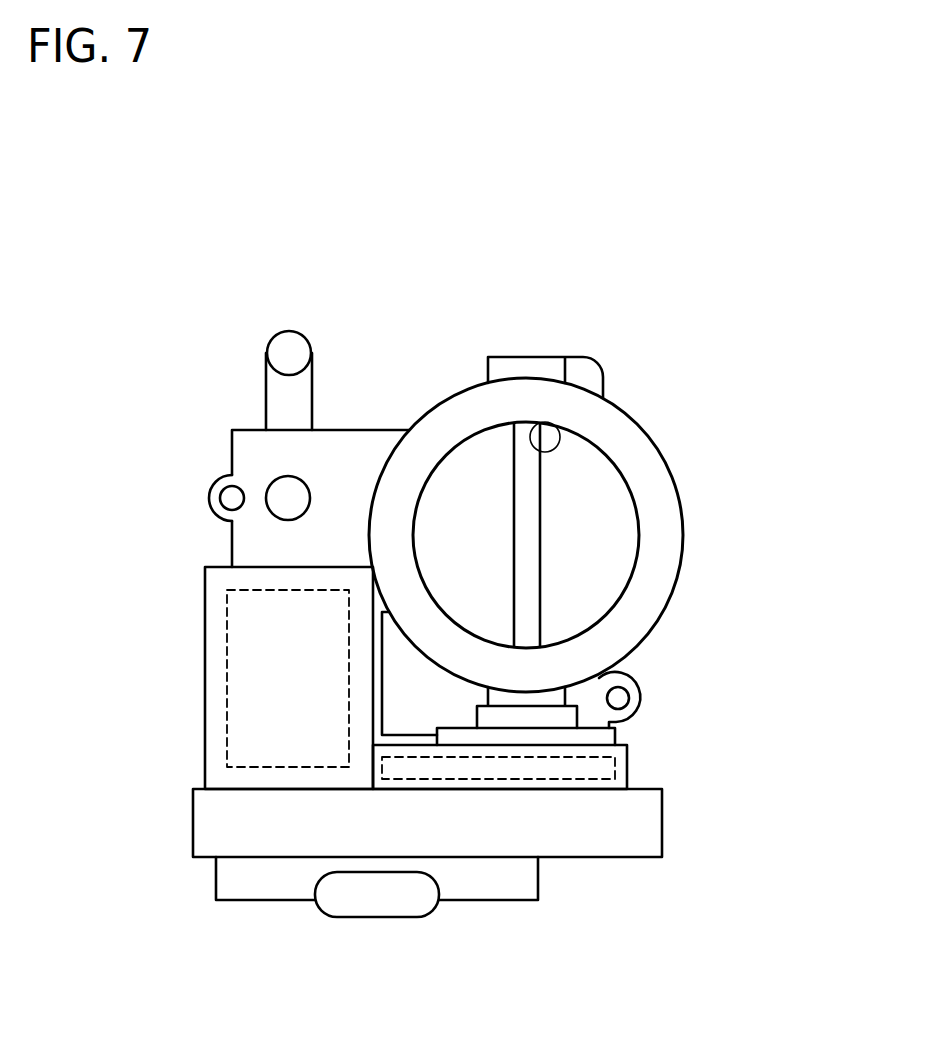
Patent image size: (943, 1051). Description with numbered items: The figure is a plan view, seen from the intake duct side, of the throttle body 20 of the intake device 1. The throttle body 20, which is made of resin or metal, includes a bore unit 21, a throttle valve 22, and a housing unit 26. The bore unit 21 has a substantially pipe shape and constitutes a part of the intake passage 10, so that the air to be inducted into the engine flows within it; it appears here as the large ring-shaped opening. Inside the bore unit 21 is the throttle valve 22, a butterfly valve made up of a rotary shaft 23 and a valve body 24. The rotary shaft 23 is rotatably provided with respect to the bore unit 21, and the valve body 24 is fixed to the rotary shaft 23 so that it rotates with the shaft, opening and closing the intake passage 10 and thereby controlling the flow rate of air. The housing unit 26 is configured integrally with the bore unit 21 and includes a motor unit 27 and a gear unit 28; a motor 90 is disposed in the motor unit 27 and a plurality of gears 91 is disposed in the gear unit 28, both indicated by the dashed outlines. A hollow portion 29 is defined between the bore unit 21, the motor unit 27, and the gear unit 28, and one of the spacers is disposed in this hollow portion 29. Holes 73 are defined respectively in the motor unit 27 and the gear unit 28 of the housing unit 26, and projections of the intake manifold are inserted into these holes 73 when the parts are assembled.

The intake device 1 is at (757, 344).
The intake passage 10 is at (527, 427).
The throttle body 20 is at (715, 481).
The bore unit 21 is at (660, 533).
The throttle valve 22 is at (567, 456).
The rotary shaft 23 is at (528, 485).
The valve body 24 is at (593, 488).
The housing unit 26 is at (432, 972).
The motor unit 27 is at (345, 778).
The gear unit 28 is at (433, 767).
The hollow portion 29 is at (403, 714).
The holes 73 is at (230, 494).
The motor 90 is at (255, 767).
The gears 91 is at (615, 773).